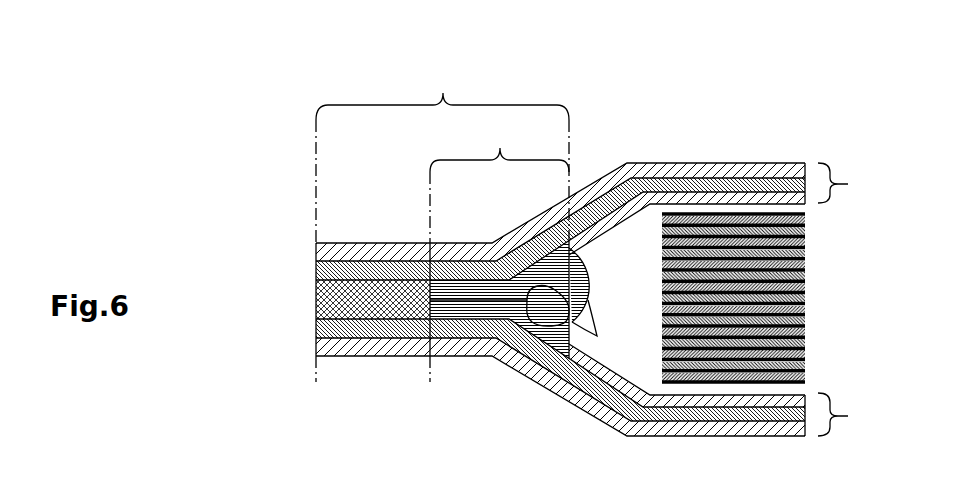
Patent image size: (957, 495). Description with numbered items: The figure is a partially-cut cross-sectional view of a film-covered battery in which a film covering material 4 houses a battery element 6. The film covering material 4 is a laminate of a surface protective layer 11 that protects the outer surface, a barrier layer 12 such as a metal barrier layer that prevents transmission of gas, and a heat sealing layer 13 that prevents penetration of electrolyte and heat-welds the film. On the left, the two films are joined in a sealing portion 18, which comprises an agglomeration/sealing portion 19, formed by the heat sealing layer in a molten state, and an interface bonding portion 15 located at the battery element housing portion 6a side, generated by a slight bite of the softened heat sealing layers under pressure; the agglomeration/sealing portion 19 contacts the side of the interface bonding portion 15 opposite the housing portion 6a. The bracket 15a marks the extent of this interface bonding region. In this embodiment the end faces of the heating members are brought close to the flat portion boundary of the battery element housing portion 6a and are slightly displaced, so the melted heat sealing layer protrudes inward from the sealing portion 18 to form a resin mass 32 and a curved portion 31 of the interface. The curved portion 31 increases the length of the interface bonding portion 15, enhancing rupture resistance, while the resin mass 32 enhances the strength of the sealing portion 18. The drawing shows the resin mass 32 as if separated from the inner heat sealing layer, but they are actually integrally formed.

The film covering material 4 is at (843, 299).
The battery element 6 is at (818, 258).
The battery element housing portion 6a is at (633, 239).
The surface protective layer 11 is at (316, 252).
The barrier layer 12 is at (316, 268).
The heat sealing layer 13 is at (316, 297).
The interface bonding portion 15 is at (458, 303).
The solder filled portion 15a is at (499, 251).
The sealing portion 18 is at (442, 223).
The agglomeration/sealing portion 19 is at (378, 300).
The curved portion 31 is at (530, 326).
The resin mass 32 is at (570, 324).